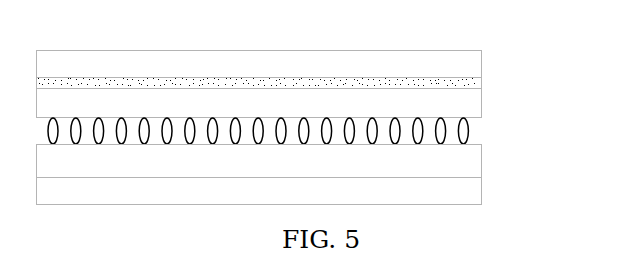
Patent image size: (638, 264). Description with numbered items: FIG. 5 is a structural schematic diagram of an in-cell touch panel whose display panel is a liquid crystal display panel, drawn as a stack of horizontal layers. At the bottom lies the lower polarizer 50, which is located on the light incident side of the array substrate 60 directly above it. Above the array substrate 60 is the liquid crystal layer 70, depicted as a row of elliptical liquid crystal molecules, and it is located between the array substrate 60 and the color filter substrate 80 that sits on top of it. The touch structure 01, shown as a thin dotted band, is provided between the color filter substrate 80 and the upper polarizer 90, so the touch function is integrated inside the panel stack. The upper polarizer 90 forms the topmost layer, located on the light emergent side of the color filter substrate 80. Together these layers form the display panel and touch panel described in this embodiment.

The upper polarizer 90 is at (476, 64).
The touch structure 01 is at (477, 84).
The color filter substrate 80 is at (465, 102).
The liquid crystal layer 70 is at (470, 128).
The array substrate 60 is at (470, 162).
The lower polarizer 50 is at (470, 188).